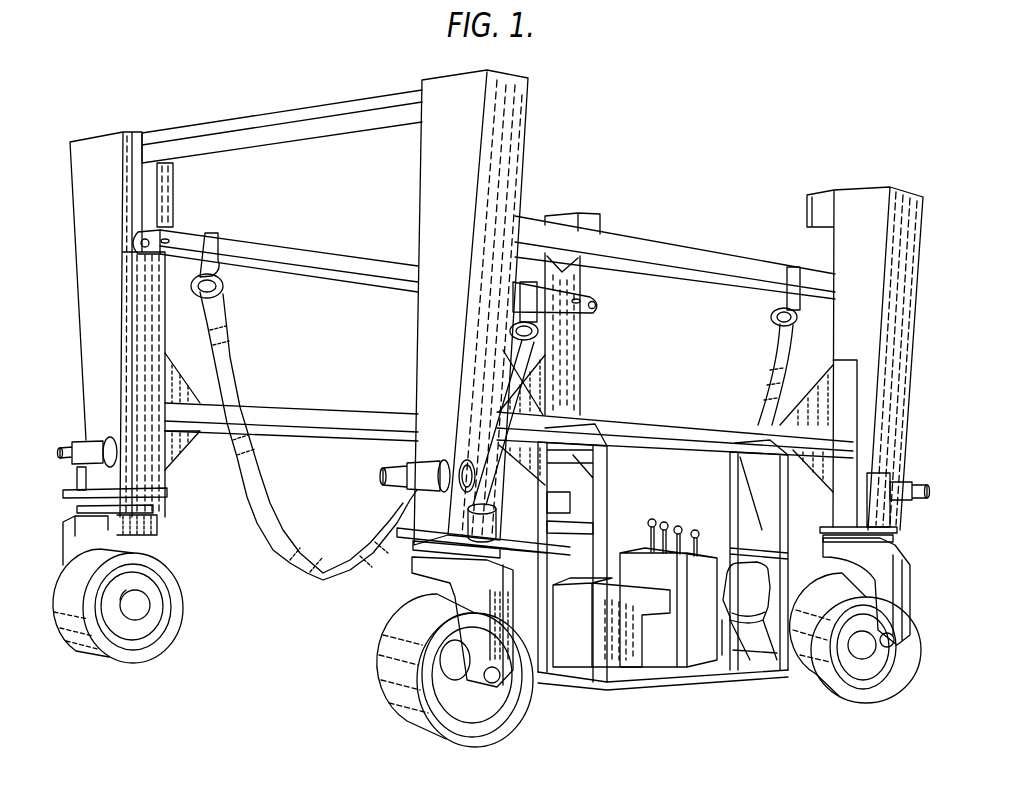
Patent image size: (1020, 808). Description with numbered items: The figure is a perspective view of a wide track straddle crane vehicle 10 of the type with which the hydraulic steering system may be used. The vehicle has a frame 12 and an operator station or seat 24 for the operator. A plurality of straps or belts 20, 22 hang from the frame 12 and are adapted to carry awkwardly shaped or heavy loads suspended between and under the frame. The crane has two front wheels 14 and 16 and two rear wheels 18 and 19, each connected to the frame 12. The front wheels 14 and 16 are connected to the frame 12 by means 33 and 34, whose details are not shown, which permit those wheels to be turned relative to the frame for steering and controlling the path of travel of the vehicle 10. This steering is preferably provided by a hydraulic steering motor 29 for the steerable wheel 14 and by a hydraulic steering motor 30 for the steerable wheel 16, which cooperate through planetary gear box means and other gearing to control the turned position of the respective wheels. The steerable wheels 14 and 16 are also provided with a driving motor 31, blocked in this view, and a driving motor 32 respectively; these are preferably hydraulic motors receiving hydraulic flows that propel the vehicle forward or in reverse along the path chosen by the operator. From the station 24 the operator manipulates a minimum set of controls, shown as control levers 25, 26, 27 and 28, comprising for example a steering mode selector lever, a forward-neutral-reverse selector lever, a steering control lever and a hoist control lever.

The straddle crane vehicle 10 is at (634, 150).
The frame 12 is at (308, 117).
The front wheel 14 is at (75, 652).
The front wheel 16 is at (380, 660).
The rear wheel 18 is at (905, 640).
The rear wheel 19 is at (580, 563).
The strap 20 is at (267, 503).
The strap 22 is at (778, 358).
The operator station 24 is at (733, 620).
The control lever 25 is at (651, 517).
The control lever 26 is at (665, 520).
The control lever 27 is at (680, 526).
The control lever 28 is at (697, 531).
The hydraulic steering motor 29 is at (76, 470).
The hydraulic steering motor 30 is at (468, 520).
The driving motor 31 is at (66, 548).
The driving motor 32 is at (500, 677).
The wheel connecting means 33 is at (162, 514).
The wheel connecting means 34 is at (407, 560).